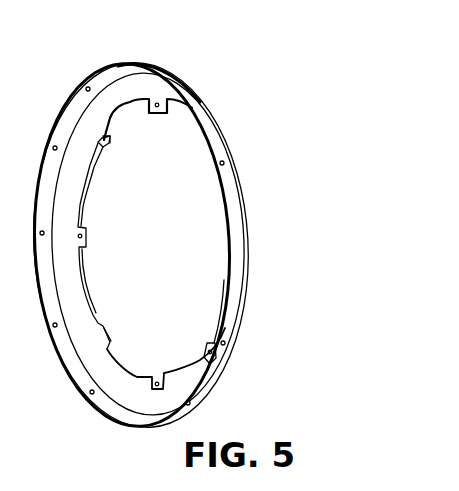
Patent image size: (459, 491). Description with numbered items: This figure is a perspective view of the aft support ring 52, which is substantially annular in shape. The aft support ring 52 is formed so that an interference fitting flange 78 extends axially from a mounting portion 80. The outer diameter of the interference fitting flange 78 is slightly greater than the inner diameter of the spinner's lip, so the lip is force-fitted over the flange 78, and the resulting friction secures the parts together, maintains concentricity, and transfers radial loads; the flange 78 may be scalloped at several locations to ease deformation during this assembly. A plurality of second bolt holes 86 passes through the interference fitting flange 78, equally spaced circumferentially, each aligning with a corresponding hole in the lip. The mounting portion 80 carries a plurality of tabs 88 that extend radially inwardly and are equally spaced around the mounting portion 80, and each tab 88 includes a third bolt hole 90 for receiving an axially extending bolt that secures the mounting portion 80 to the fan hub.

The aft support ring 52 is at (237, 83).
The interference fitting flange 78 is at (224, 202).
The mounting portion 80 is at (88, 297).
The second bolt holes 86 is at (224, 162).
The tabs 88 is at (107, 150).
The third bolt hole 90 is at (110, 139).